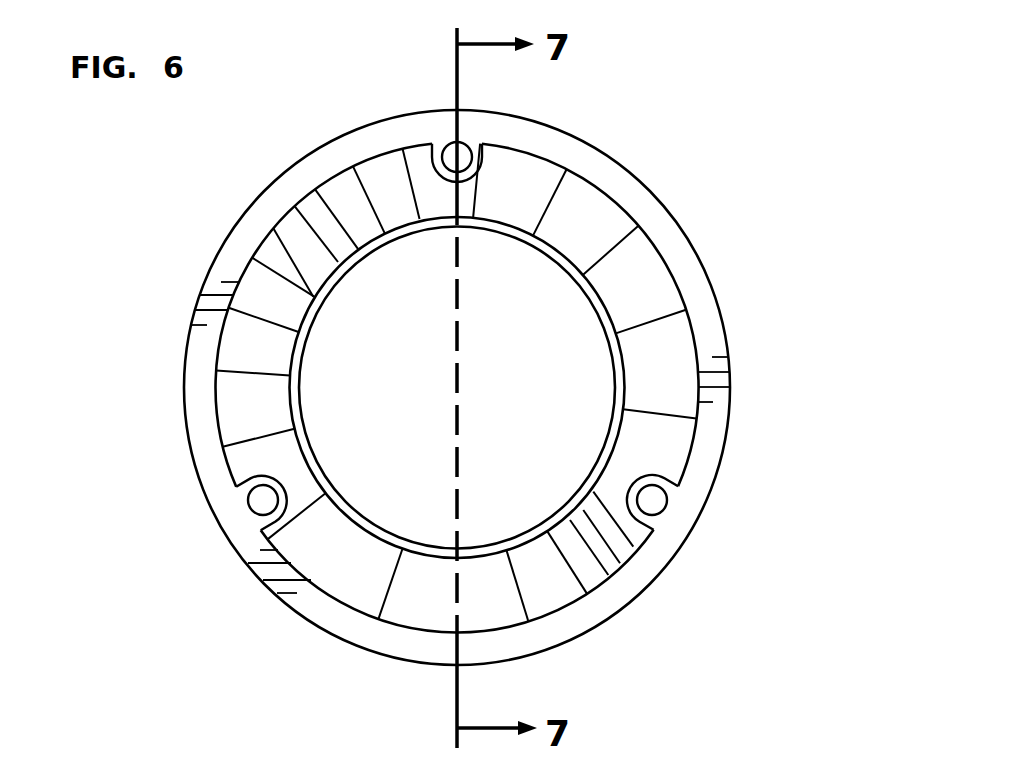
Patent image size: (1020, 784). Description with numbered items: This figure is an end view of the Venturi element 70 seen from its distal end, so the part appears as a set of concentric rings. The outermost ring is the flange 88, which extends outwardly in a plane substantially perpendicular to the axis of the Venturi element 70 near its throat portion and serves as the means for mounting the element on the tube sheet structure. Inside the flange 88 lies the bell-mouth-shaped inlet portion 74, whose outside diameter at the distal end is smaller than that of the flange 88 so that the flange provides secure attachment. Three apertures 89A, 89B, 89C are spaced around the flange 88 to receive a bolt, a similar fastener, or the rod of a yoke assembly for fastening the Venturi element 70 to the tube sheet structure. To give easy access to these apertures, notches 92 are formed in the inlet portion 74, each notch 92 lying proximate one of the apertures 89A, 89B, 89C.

The Venturi element 70 is at (690, 129).
The inlet bell-mouth-shaped portion 74 is at (564, 573).
The flange 88 is at (236, 260).
The aperture 89A is at (654, 501).
The aperture 89B is at (262, 500).
The aperture 89C is at (455, 156).
The notch 92 is at (652, 473).